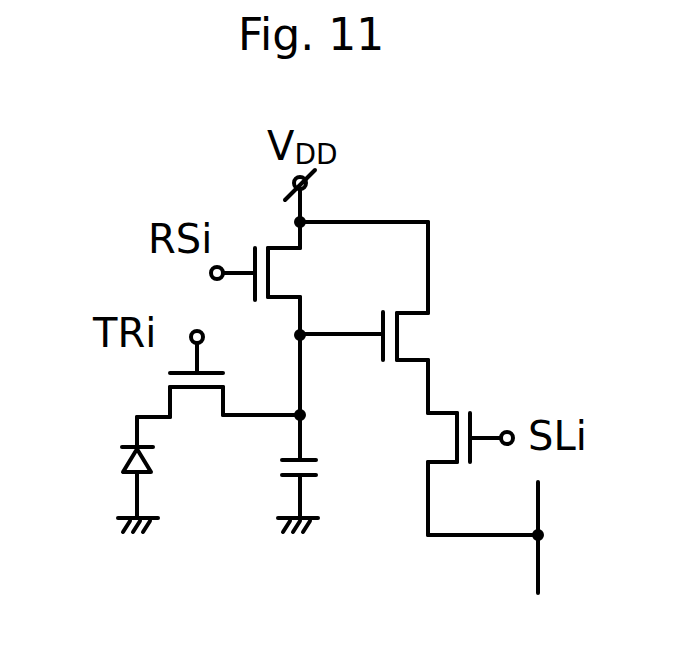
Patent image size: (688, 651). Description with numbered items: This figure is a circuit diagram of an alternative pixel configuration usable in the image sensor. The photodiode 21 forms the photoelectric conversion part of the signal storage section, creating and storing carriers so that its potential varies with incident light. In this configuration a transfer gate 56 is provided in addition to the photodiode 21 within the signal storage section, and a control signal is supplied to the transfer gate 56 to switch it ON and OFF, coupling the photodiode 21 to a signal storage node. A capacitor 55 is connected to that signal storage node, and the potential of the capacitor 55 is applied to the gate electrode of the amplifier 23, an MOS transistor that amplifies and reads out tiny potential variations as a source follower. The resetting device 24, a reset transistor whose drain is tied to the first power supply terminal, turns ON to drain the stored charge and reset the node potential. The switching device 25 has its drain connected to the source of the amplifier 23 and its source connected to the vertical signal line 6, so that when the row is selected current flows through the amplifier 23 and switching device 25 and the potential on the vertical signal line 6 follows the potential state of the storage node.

The vertical signal line 6 is at (540, 500).
The photodiode 21 is at (122, 467).
The MOS transistor (amplifier) 23 is at (432, 337).
The resetting device 24 is at (287, 292).
The switching device 25 is at (438, 437).
The capacitor 55 is at (313, 462).
The transfer gate 56 is at (192, 390).